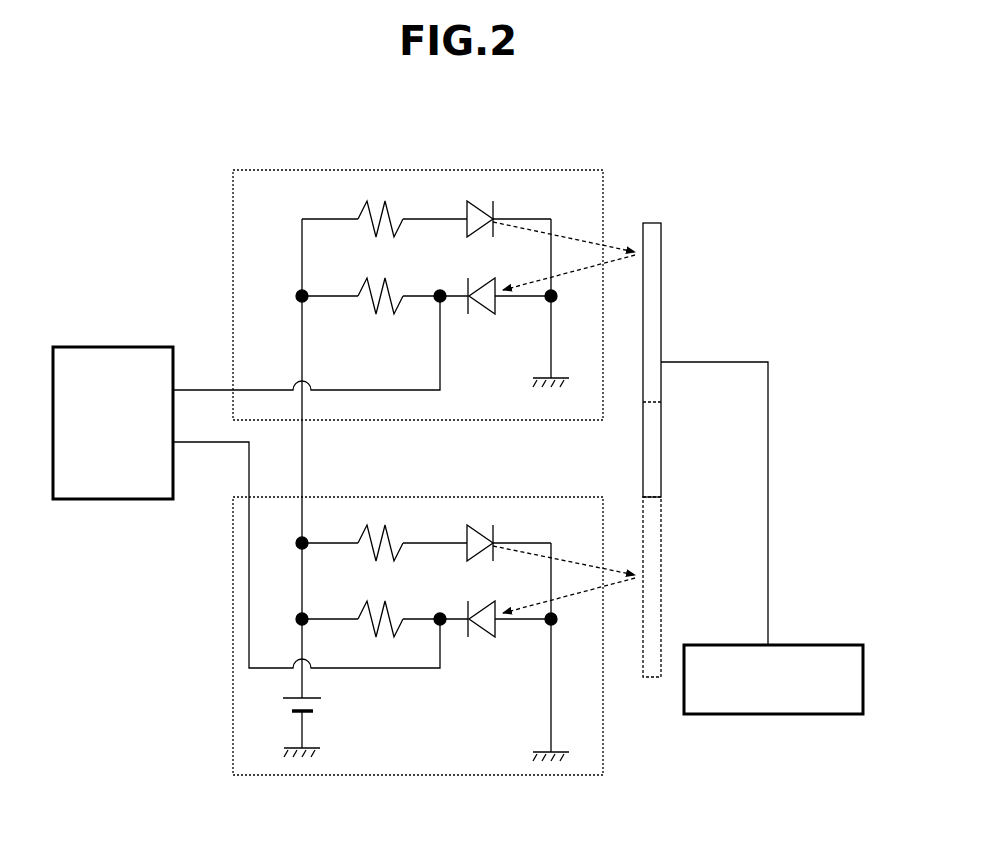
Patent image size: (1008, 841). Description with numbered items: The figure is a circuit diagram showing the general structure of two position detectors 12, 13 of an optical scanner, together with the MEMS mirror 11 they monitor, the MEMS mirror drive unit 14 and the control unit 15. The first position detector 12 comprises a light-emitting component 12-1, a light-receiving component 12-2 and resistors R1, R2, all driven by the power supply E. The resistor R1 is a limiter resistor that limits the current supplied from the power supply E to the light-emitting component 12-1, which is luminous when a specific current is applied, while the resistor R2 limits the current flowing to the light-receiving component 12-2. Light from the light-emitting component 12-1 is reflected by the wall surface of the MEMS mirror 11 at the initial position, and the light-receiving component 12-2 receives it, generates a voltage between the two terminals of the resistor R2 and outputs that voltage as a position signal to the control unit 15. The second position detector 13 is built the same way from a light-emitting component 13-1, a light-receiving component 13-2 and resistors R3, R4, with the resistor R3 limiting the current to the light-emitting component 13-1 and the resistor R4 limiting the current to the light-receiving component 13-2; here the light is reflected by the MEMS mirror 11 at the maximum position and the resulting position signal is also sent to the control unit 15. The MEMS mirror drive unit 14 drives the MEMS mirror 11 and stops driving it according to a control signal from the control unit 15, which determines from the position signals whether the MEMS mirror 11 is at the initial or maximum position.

The MEMS mirror 11 is at (662, 252).
The position detector 12 is at (348, 169).
The light-emitting component 12-1 is at (482, 204).
The light-receiving component 12-2 is at (483, 315).
The position detector 13 is at (397, 495).
The light-emitting component 13-1 is at (483, 527).
The light-receiving component 13-2 is at (483, 638).
The MEMS mirror drive unit 14 is at (763, 715).
The control unit 15 is at (113, 343).
The resistor R1 is at (392, 216).
The resistor R2 is at (392, 293).
The resistor R3 is at (393, 545).
The resistor R4 is at (393, 620).
The power supply E is at (311, 725).